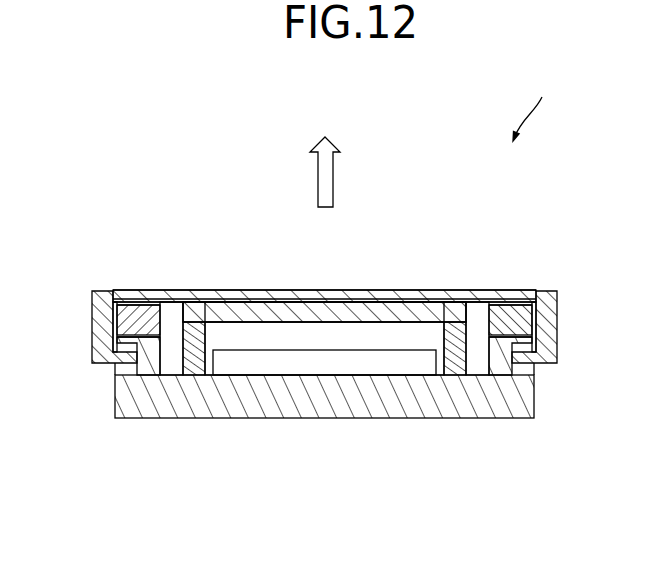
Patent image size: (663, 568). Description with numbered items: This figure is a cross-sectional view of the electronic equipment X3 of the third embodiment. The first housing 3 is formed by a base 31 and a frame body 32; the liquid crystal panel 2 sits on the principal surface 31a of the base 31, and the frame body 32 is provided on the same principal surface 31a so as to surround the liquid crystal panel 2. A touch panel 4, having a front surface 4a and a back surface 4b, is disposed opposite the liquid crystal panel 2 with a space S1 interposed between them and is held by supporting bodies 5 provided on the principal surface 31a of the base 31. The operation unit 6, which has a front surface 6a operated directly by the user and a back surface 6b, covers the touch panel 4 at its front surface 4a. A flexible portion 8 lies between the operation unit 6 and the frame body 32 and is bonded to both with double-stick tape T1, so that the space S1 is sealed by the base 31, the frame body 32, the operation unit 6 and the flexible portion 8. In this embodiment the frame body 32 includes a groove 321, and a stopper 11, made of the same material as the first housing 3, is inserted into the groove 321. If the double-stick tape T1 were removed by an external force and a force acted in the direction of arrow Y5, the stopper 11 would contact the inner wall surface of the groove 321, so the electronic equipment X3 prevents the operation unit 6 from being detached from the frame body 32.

The liquid crystal panel 2 is at (318, 372).
The first housing 3 is at (315, 434).
The base 31 is at (177, 416).
The principal surface 31a is at (196, 375).
The frame body 32 is at (117, 366).
The groove 321 is at (118, 334).
The touch panel 4 is at (324, 258).
The front surface 4a is at (345, 290).
The back surface 4b is at (373, 303).
The supporting body 5 is at (205, 302).
The operation unit 6 is at (324, 272).
The front surface 6a is at (262, 290).
The back surface 6b is at (283, 302).
The flexible portion 8 is at (155, 302).
The stopper 11 is at (99, 290).
The space S1 is at (362, 330).
The double-stick tape T1 is at (115, 316).
The electronic equipment X3 is at (557, 93).
The arrow Y5 is at (320, 142).